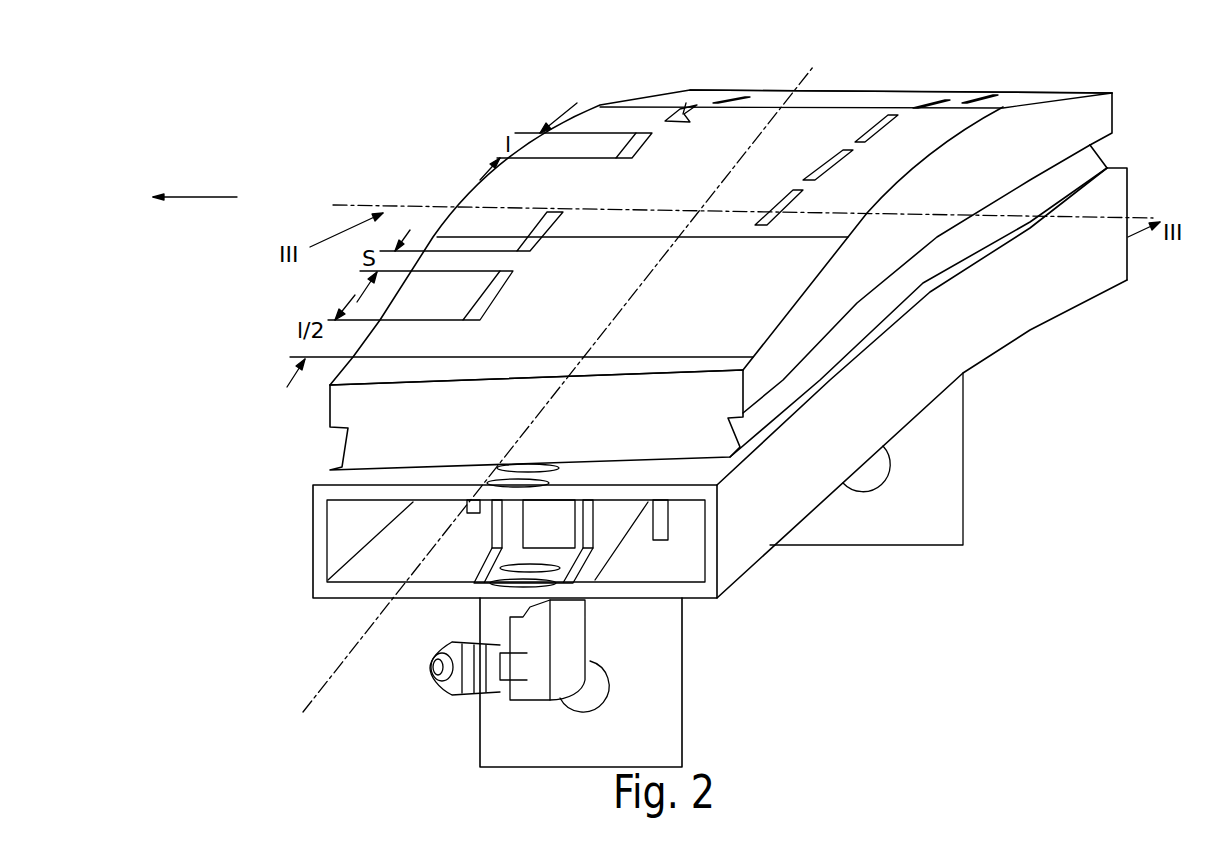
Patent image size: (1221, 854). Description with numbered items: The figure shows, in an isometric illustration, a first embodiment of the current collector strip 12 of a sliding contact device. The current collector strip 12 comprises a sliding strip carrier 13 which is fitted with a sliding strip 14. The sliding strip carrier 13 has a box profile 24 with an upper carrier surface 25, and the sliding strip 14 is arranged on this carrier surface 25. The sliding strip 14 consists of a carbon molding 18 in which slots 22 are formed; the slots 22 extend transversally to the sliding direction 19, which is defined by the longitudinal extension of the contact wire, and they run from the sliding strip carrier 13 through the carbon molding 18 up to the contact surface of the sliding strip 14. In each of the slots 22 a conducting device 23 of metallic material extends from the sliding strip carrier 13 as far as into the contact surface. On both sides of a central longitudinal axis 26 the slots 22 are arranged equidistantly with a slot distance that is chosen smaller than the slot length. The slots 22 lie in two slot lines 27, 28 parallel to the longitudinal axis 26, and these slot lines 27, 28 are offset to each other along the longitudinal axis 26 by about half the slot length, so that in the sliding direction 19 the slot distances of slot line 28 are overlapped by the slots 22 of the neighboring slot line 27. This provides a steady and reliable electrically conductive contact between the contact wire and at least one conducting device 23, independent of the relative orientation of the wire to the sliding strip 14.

The current collector strip 12 is at (427, 157).
The sliding strip carrier 13 is at (745, 580).
The sliding strip 14 is at (947, 77).
The carbon molding 18 is at (848, 100).
The sliding direction 19 is at (196, 197).
The slots 22 is at (693, 107).
The conducting device 23 is at (636, 133).
The box profile 24 is at (697, 600).
The upper carrier surface 25 is at (347, 483).
The central longitudinal axis 26 is at (330, 680).
The slot line 27 is at (753, 81).
The slot line 28 is at (993, 80).